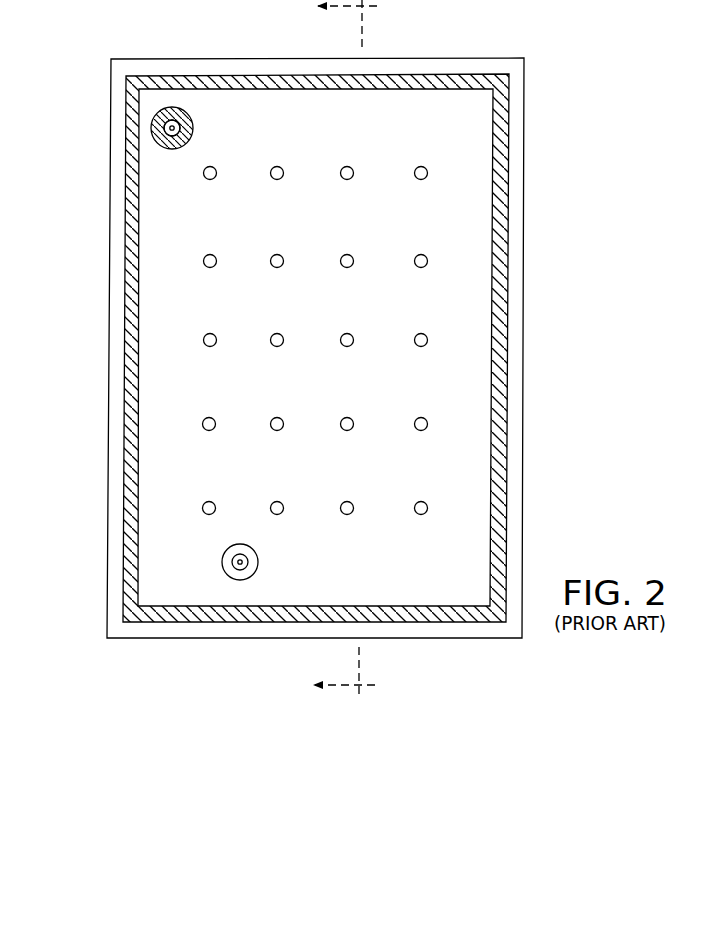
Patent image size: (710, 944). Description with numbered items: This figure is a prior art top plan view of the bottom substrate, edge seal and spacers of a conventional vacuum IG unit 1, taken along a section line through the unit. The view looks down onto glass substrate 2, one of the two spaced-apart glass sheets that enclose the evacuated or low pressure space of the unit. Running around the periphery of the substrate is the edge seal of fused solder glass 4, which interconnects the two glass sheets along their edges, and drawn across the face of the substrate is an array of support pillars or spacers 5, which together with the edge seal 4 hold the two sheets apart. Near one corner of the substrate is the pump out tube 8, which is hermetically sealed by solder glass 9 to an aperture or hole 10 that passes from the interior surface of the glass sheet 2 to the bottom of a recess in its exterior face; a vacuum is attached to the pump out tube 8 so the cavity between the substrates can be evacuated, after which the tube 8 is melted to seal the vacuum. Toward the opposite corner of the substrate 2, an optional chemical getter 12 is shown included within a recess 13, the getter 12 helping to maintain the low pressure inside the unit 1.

The vacuum IG unit 1 is at (311, 359).
The glass substrate 2 is at (312, 68).
The edge seal of fused solder glass 4 is at (225, 78).
The support pillars or spacers 5 is at (428, 260).
The pump out tube 8 is at (152, 118).
The solder glass 9 is at (172, 149).
The aperture or hole 10 is at (168, 130).
The chemical getter 12 is at (239, 564).
The recess 13 is at (258, 562).